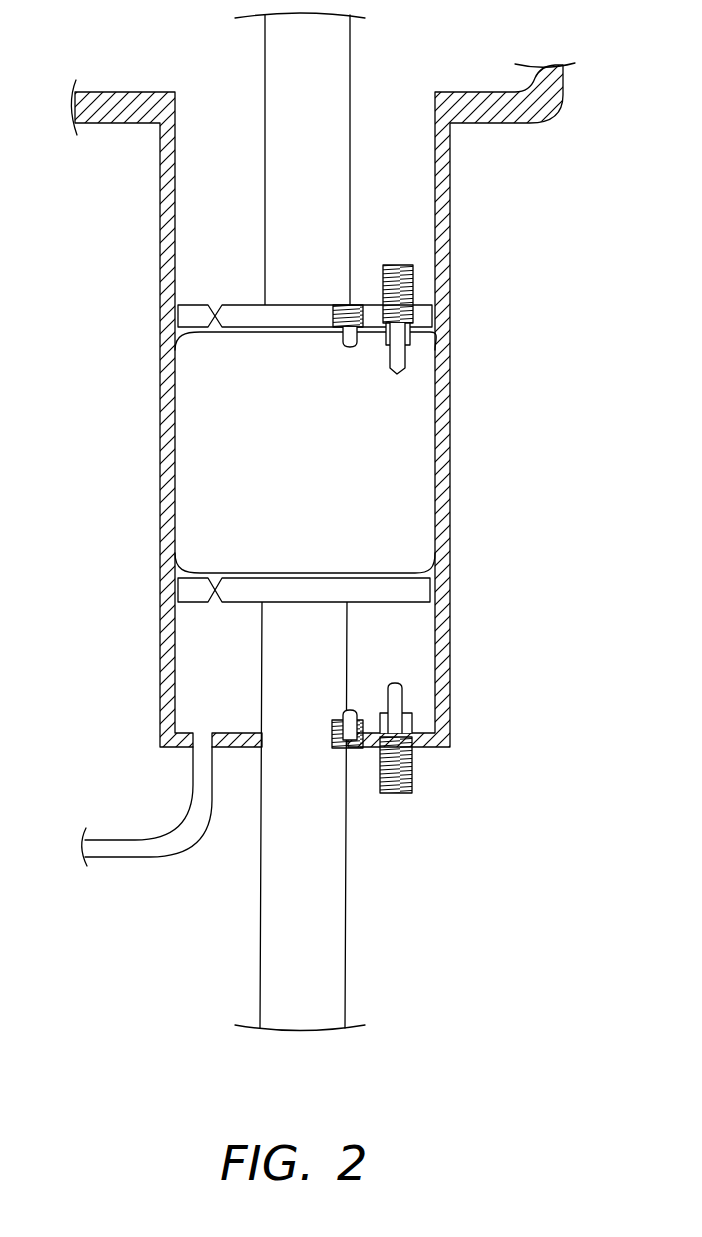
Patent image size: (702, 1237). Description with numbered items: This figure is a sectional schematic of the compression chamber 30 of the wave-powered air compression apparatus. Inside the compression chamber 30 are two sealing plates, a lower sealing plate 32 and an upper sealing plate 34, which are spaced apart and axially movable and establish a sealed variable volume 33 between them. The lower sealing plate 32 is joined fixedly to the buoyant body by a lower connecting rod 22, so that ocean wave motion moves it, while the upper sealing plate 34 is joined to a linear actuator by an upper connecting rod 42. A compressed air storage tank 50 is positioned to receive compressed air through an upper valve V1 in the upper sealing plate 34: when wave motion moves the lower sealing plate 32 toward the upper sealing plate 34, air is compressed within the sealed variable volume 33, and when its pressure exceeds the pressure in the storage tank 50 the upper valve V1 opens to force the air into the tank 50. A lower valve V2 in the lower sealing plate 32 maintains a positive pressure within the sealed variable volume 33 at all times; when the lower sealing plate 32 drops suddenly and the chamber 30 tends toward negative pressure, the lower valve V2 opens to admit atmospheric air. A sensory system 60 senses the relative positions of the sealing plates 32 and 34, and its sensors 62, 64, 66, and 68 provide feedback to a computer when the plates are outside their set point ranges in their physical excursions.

The lower connecting rod 22 is at (258, 902).
The upper connecting rod 42 is at (297, 96).
The compression chamber 30 is at (316, 464).
The sealed variable volume 33 is at (162, 520).
The compressed air storage tank 50 is at (405, 152).
The upper sealing plate 34 is at (261, 319).
The lower sealing plate 32 is at (307, 610).
The upper valve V1 is at (213, 332).
The lower valve V2 is at (212, 606).
The sensory system 60 is at (398, 252).
The sensor 62 is at (348, 350).
The sensor 64 is at (398, 378).
The sensor 66 is at (345, 745).
The sensor 68 is at (400, 690).